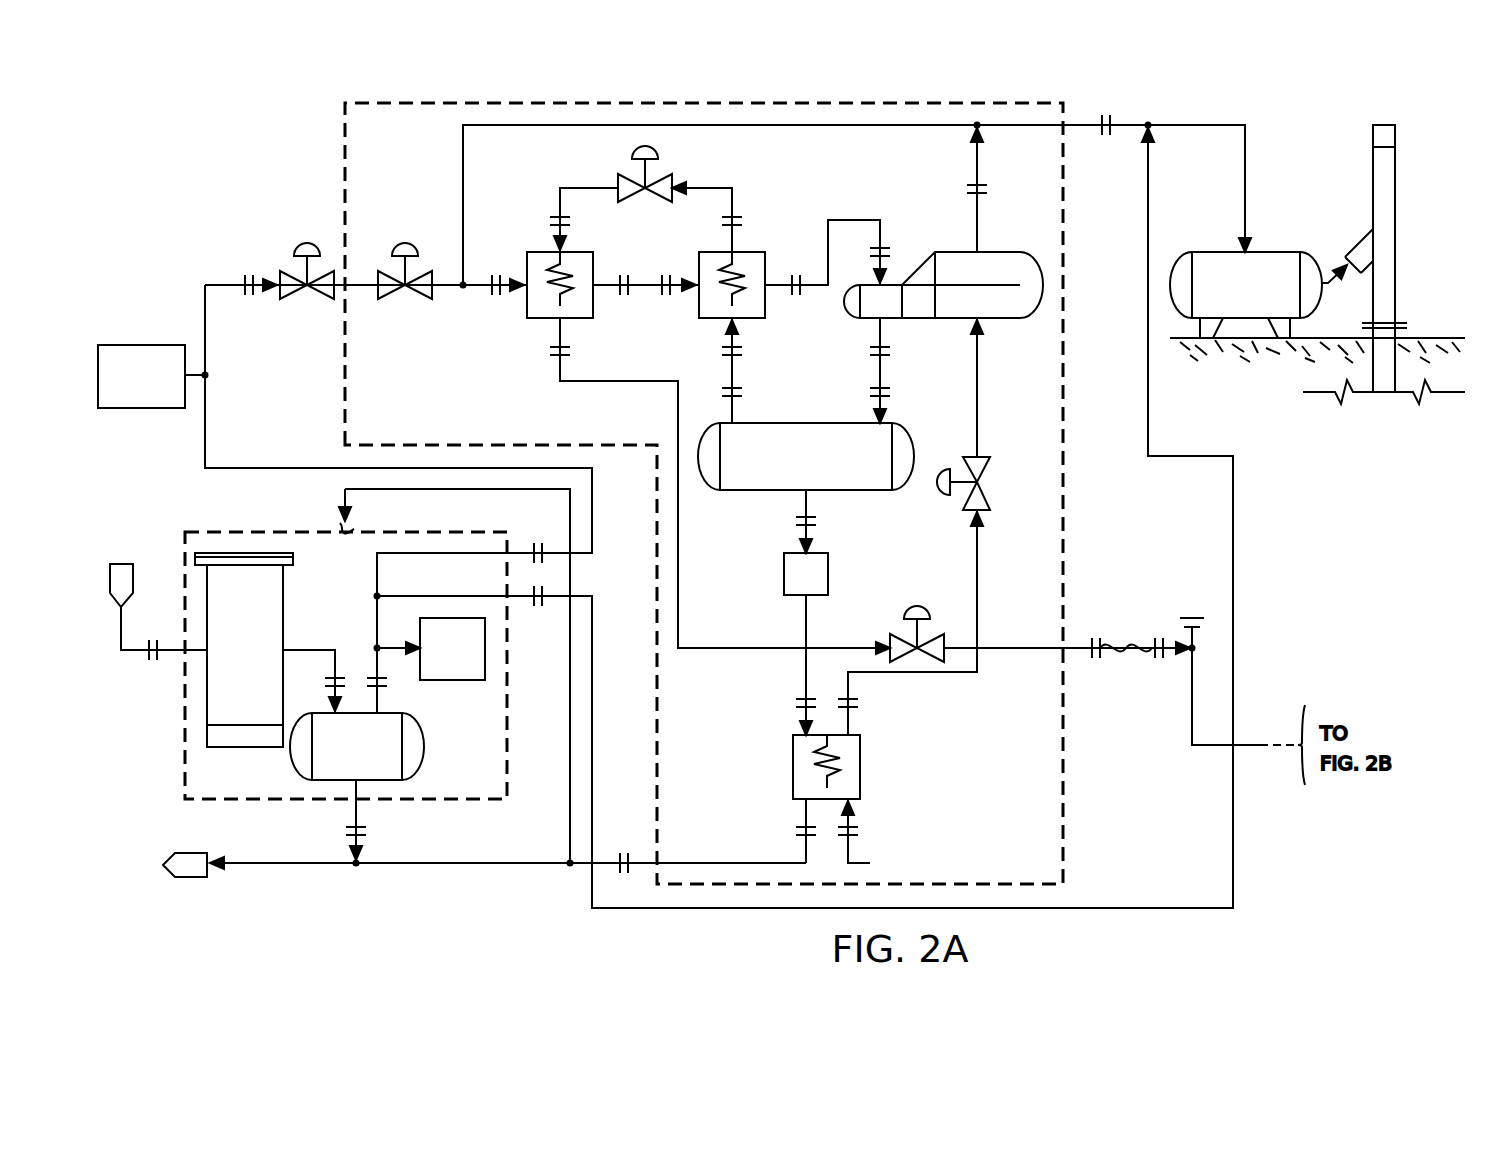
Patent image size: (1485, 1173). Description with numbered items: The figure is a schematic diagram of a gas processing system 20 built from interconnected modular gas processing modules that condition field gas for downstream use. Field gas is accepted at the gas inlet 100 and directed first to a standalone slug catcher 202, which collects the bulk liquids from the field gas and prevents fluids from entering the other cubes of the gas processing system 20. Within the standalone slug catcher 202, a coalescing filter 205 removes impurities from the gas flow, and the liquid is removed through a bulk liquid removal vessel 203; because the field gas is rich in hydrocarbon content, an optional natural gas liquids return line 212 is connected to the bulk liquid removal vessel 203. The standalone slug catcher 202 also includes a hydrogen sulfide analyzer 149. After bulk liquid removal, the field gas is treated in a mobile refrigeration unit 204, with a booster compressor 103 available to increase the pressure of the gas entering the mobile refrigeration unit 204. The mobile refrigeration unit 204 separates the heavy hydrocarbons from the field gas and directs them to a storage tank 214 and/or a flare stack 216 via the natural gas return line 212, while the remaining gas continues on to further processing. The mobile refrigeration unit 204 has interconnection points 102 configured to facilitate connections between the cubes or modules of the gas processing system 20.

The gas processing system 20 is at (260, 134).
The mobile refrigeration unit 204 is at (340, 208).
The interconnection points 102 is at (244, 273).
The booster compressor 103 is at (124, 392).
The gas inlet 100 is at (124, 564).
The standalone slug catcher 202 is at (174, 721).
The coalescing filter 205 is at (226, 660).
The hydrogen sulfide analyzer 149 is at (436, 665).
The bulk liquid removal vessel 203 is at (339, 760).
The natural gas liquids return line 212 is at (960, 300).
The storage tank 214 is at (1228, 300).
The flare stack 216 is at (1396, 227).